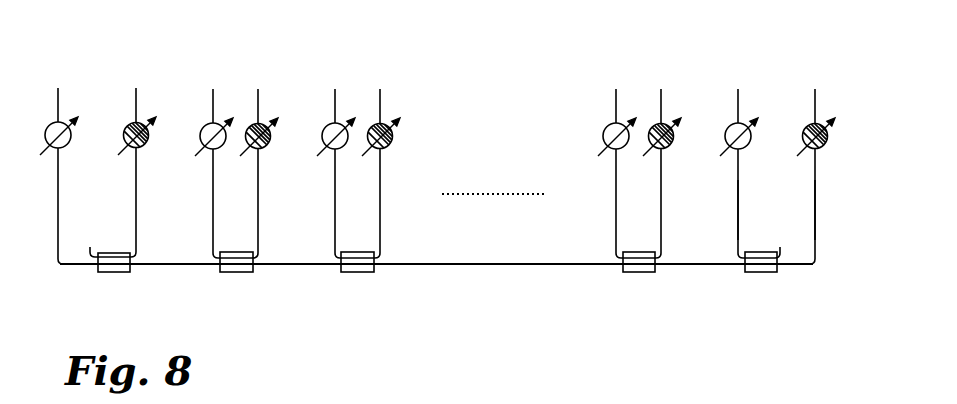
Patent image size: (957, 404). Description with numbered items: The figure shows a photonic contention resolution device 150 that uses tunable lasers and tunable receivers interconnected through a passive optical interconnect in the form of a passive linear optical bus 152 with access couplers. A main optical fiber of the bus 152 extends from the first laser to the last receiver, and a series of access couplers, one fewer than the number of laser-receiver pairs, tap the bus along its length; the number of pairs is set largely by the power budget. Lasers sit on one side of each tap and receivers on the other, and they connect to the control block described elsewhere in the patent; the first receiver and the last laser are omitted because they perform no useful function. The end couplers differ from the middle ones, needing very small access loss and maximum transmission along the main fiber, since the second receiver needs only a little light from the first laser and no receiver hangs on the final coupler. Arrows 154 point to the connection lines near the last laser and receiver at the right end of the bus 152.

The photonic contention resolution device 150 is at (486, 54).
The passive linear optical bus 152 is at (502, 265).
The connection lines 154 is at (748, 208).